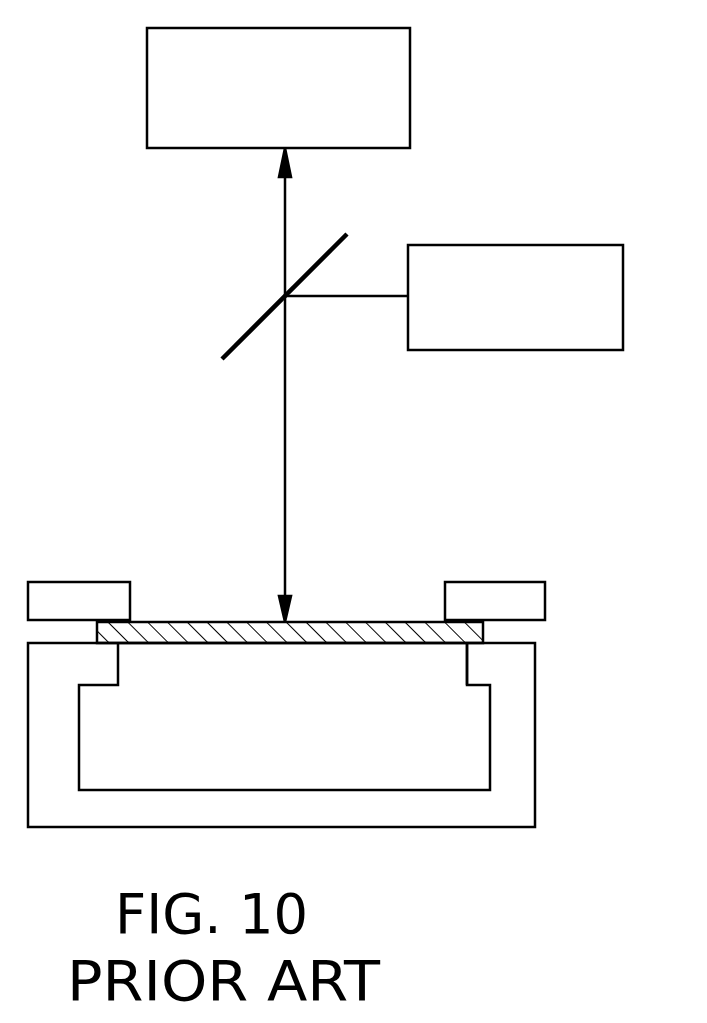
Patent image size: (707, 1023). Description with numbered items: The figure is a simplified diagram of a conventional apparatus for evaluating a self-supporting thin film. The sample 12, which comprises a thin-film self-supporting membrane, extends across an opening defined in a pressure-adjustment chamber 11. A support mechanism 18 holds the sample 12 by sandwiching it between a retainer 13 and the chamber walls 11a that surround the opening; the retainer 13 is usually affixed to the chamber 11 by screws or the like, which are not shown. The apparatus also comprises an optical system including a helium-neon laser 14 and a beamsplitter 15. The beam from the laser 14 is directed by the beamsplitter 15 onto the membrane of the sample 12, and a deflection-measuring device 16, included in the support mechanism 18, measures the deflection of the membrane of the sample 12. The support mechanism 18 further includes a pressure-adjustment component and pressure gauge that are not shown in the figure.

The pressure-adjustment chamber 11 is at (535, 740).
The chamber walls 11a is at (475, 665).
The sample 12 is at (257, 635).
The retainer 13 is at (527, 603).
The He-Ne laser 14 is at (512, 337).
The beamsplitter 15 is at (246, 330).
The deflection-measuring device 16 is at (148, 98).
The support mechanism 18 is at (617, 575).